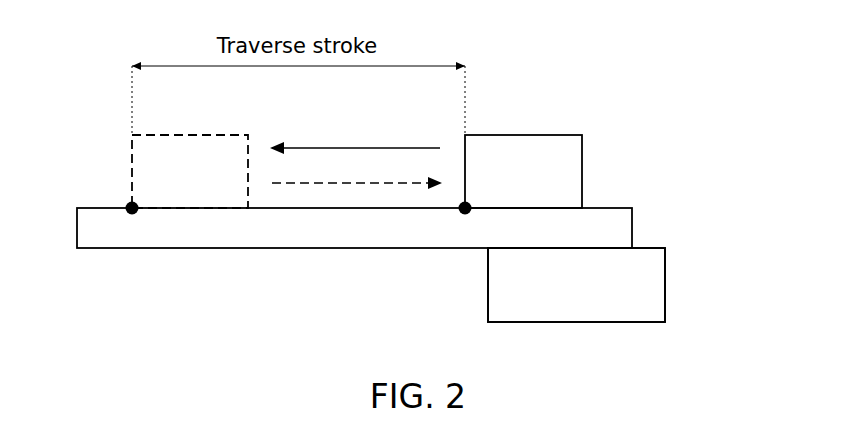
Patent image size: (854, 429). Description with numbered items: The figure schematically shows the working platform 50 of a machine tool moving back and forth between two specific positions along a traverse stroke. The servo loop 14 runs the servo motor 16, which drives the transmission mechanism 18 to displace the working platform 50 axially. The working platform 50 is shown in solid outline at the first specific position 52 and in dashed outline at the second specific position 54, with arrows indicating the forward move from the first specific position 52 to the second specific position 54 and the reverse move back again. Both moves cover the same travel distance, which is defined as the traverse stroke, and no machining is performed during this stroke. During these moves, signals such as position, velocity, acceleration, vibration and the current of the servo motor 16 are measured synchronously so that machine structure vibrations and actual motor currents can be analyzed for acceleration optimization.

The servo loop 14 is at (665, 298).
The servo motor 16 is at (576, 285).
The transmission mechanism 18 is at (632, 222).
The working platform 50 is at (582, 157).
The first specific position 52 is at (475, 205).
The second specific position 54 is at (142, 205).